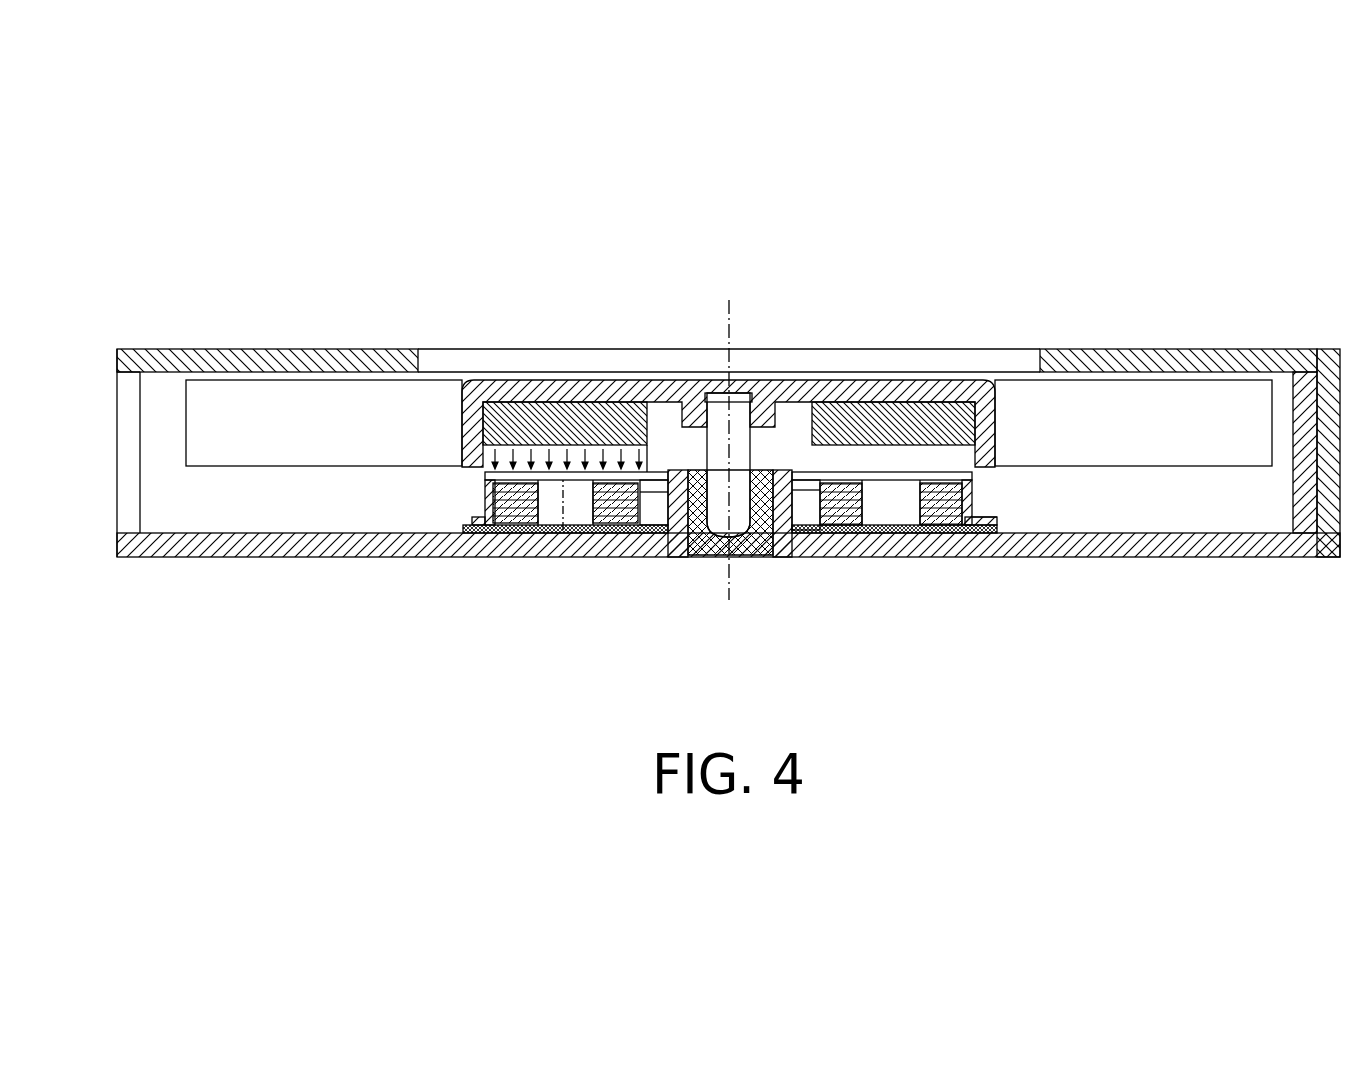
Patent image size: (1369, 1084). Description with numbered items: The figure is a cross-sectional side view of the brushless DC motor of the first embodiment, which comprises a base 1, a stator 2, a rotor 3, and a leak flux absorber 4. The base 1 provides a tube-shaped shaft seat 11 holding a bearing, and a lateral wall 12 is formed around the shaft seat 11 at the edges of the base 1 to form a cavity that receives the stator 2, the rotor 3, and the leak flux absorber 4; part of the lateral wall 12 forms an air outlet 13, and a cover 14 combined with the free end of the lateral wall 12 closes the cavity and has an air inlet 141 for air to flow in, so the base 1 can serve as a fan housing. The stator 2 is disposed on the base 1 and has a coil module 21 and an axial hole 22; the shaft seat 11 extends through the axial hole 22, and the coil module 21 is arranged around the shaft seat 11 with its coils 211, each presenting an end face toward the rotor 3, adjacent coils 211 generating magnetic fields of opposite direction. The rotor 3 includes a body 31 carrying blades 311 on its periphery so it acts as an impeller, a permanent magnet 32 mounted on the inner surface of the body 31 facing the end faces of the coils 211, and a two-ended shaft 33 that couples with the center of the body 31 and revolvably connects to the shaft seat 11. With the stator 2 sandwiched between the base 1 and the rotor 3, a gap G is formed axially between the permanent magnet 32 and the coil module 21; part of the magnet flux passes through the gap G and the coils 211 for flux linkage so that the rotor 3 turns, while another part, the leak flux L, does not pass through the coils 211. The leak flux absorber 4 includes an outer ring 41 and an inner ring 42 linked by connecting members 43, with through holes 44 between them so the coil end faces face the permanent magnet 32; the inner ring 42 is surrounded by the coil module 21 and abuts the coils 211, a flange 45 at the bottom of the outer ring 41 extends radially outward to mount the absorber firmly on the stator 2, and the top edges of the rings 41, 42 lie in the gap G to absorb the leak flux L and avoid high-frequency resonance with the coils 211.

The base 1 is at (1238, 565).
The shaft seat 11 is at (673, 502).
The lateral wall 12 is at (1305, 392).
The air outlet 13 is at (152, 498).
The cover 14 is at (298, 358).
The air inlet 141 is at (445, 355).
The stator 2 is at (743, 577).
The coil module 21 is at (932, 530).
The coil 211 is at (956, 533).
The axial hole 22 is at (793, 540).
The rotor 3 is at (729, 420).
The body 31 is at (898, 385).
The blades 311 is at (1177, 395).
The permanent magnet 32 is at (953, 420).
The shaft 33 is at (741, 523).
The leak flux absorber 4 is at (756, 470).
The outer ring 41 is at (972, 493).
The inner ring 42 is at (813, 480).
The connecting members 43 is at (860, 482).
The through holes 44 is at (883, 480).
The flange 45 is at (985, 512).
The gap G is at (575, 550).
The leak flux L is at (657, 467).